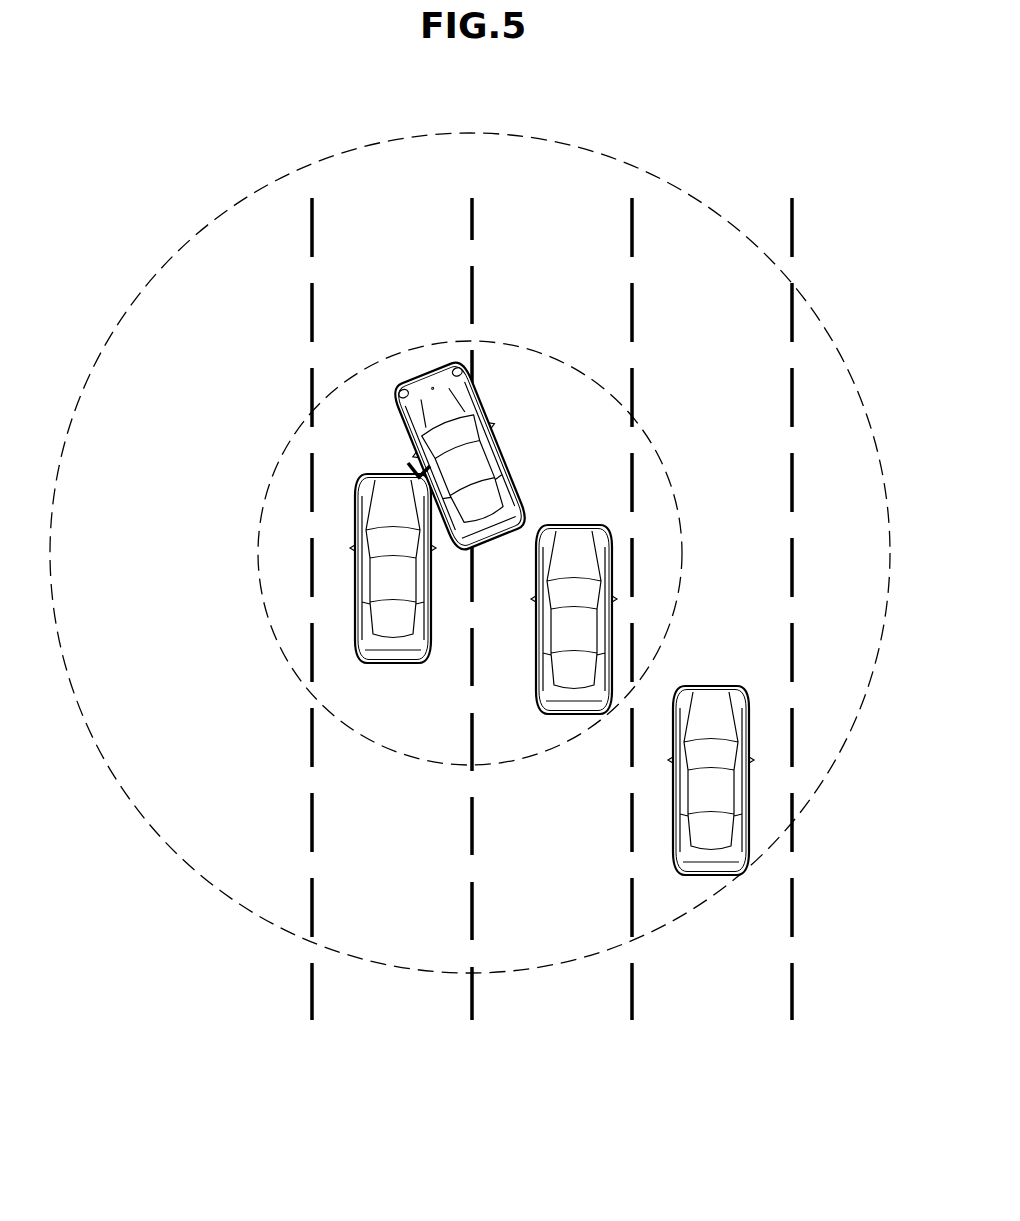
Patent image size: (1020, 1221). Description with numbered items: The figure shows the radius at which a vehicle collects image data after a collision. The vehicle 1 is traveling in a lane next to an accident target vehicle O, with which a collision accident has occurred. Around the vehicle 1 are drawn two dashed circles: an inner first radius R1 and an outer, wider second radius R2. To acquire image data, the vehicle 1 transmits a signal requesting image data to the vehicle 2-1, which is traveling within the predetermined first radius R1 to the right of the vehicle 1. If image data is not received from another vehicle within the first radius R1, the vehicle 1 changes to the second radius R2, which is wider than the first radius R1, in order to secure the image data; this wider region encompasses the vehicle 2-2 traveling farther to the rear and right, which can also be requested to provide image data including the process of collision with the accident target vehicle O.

The vehicle 1 is at (376, 455).
The accident target vehicle O is at (410, 355).
The vehicle 2-1 is at (572, 508).
The vehicle 2-2 is at (720, 667).
The first radius R1 is at (497, 341).
The second radius R2 is at (498, 133).